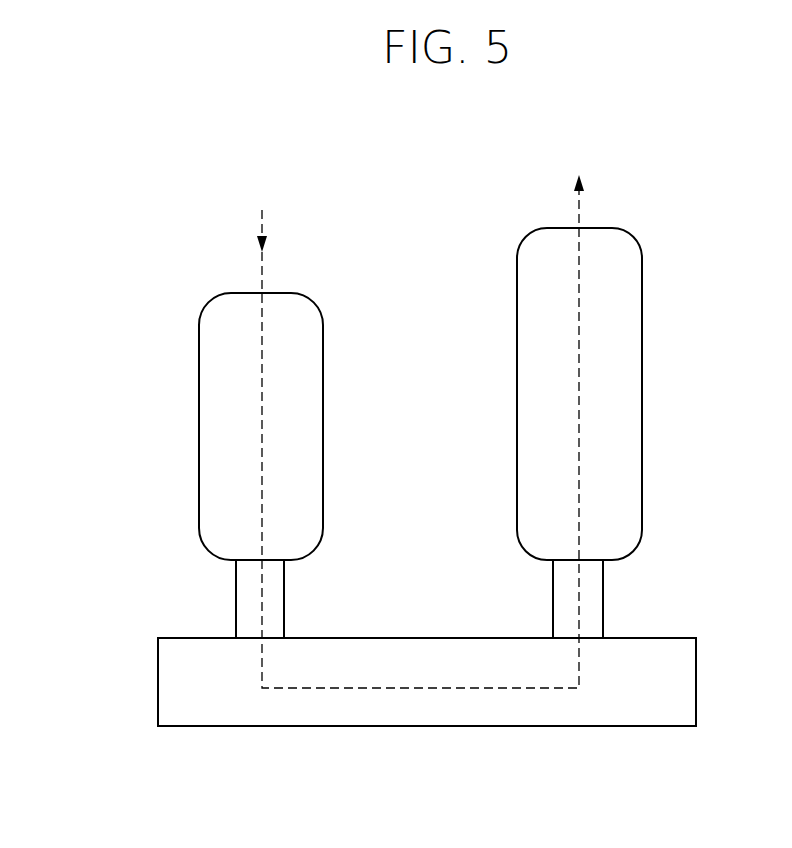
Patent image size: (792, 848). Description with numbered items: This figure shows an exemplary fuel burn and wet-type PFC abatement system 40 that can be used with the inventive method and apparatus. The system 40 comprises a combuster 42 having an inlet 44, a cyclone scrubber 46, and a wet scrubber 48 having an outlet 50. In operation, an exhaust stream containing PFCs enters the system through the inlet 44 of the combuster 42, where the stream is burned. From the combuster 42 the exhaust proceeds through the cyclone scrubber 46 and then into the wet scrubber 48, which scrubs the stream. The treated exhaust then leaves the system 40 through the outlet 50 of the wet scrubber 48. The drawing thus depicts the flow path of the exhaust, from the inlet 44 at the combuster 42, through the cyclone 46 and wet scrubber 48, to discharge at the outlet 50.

The fuel burn and wet-type PFC abatement system 40 is at (167, 438).
The combuster 42 is at (177, 363).
The inlet 44 is at (282, 290).
The cyclone scrubber 46 is at (137, 673).
The wet scrubber 48 is at (655, 300).
The outlet 50 is at (565, 227).